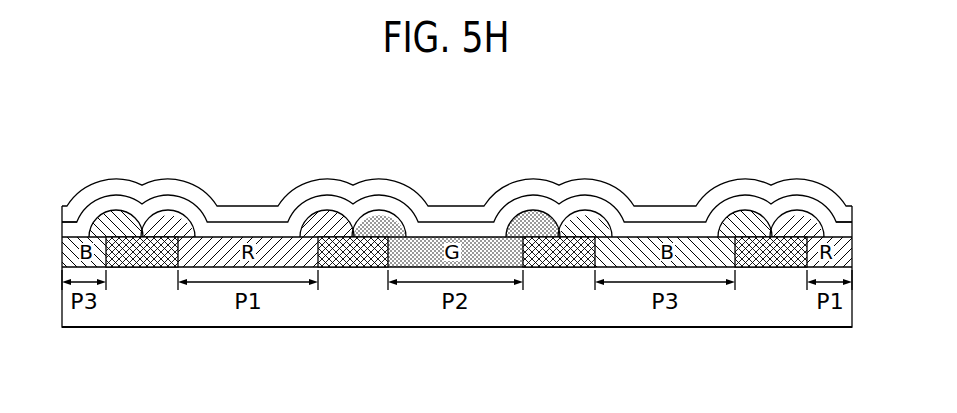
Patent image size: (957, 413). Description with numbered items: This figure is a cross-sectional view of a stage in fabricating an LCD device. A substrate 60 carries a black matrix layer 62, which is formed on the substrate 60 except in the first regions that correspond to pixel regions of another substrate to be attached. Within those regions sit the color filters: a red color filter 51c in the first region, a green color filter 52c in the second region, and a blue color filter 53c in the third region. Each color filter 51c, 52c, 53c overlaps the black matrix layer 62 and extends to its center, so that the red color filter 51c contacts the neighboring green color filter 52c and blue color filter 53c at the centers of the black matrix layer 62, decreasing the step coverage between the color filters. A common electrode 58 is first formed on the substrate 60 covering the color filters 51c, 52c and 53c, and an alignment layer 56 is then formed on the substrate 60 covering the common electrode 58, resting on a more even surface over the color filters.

The red color filter 51c is at (267, 238).
The green color filter 52c is at (473, 238).
The blue color filter 53c is at (72, 237).
The alignment layer 56 is at (537, 182).
The common electrode 58 is at (578, 200).
The substrate 60 is at (715, 310).
The black matrix layer 62 is at (773, 267).